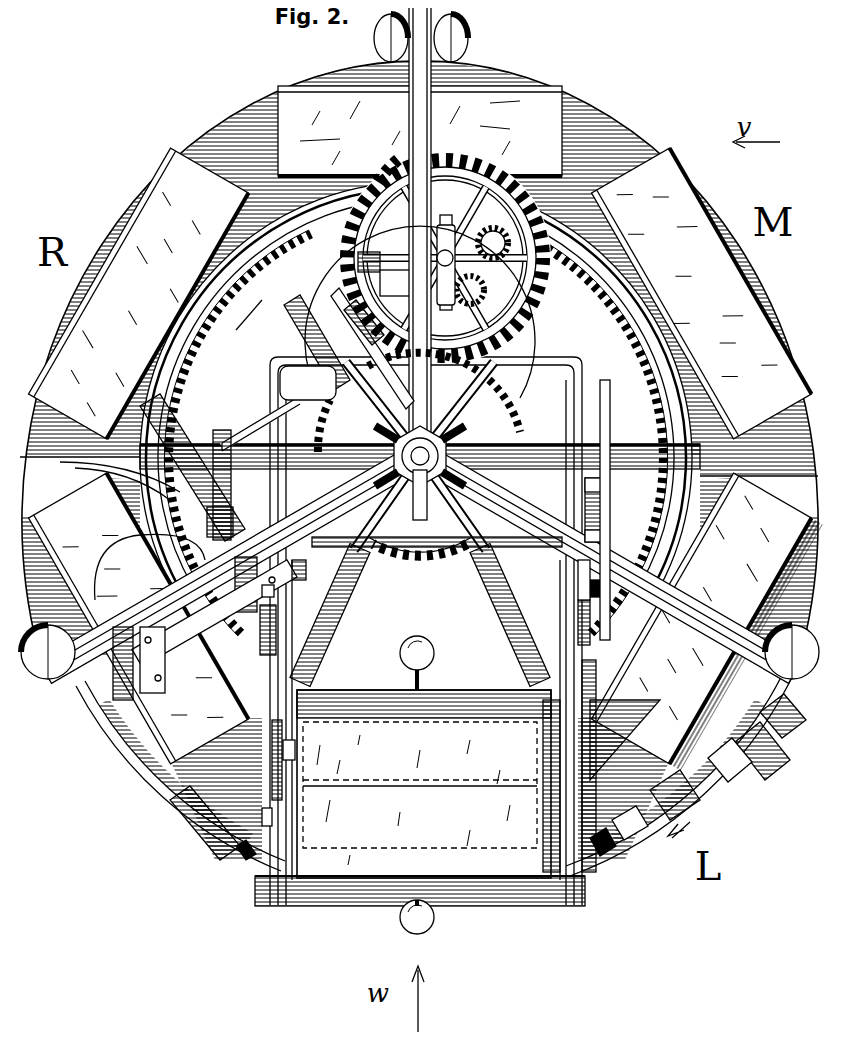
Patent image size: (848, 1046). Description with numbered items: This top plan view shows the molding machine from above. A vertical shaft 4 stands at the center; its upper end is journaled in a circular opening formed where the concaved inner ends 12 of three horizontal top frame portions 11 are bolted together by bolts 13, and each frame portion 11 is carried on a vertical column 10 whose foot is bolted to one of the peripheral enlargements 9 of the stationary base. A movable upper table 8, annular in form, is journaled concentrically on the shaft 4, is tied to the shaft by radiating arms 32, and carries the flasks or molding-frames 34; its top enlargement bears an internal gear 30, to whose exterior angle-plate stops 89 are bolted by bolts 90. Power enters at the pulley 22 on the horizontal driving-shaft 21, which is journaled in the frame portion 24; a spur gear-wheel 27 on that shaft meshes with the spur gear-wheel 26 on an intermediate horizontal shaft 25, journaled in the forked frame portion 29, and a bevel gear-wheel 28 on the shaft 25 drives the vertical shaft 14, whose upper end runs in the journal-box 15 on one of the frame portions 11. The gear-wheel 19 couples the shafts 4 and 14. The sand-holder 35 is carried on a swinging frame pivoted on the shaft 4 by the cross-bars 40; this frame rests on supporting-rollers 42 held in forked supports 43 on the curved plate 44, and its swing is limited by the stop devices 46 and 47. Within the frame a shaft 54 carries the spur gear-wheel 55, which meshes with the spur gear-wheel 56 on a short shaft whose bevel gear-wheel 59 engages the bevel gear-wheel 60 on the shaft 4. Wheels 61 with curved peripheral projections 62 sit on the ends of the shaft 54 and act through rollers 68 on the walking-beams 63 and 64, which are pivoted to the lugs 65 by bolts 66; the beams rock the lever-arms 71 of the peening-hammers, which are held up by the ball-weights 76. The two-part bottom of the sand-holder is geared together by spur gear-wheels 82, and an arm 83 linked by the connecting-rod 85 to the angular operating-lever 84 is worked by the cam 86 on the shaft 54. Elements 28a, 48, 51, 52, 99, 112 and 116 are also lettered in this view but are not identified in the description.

The vertical shaft 4 is at (482, 430).
The movable upper table 8 is at (617, 150).
The peripheral enlargements 9 is at (460, 50).
The vertical columns 10 is at (452, 30).
The horizontal top frame portions 11 is at (420, 345).
The inner ends of frame portions 12 is at (456, 438).
The bolts 13 is at (452, 450).
The shaft 14 is at (446, 298).
The journal-box 15 is at (446, 216).
The gear-wheel 19 is at (488, 410).
The horizontal driving-shaft 21 is at (262, 430).
The pulley 22 is at (192, 467).
The frame portion 24 is at (396, 336).
The intermediate horizontal shaft 25 is at (368, 262).
The spur gear-wheel 26 is at (290, 302).
The spur gear-wheel 27 is at (332, 372).
The bevel gear-wheel 28 is at (336, 290).
The gear 28a is at (396, 178).
The bifurcated frame portion 29 is at (388, 283).
The internal gear 30 is at (240, 333).
The arms 32 is at (604, 462).
The flasks 34 is at (426, 428).
The upper sand-holder 35 is at (500, 890).
The cross-bars 40 is at (512, 446).
The supporting-rollers 42 is at (726, 754).
The forked supports 43 is at (664, 806).
The curved plate 44 is at (604, 856).
The stop device 46 is at (180, 818).
The stop device 47 is at (772, 738).
The stop 48 is at (244, 850).
The pinion 51 is at (470, 250).
The gear sector 52 is at (312, 636).
The shaft 54 is at (508, 548).
The spur gear-wheel 55 is at (276, 592).
The spur gear-wheel 56 is at (424, 784).
The bevel gear-wheel 59 is at (594, 730).
The bevel gear-wheel 60 is at (520, 332).
The wheels 61 is at (601, 511).
The curved peripheral projections 62 is at (601, 488).
The walking-beam 63 is at (266, 816).
The walking-beam 64 is at (540, 652).
The lugs 65 is at (570, 606).
The bolts 66 is at (570, 620).
The roller 68 is at (601, 537).
The lever-arm 71 is at (272, 860).
The ball-weights 76 is at (422, 648).
The spur gear-wheels 82 is at (545, 736).
The arm 83 is at (290, 752).
The angular operating-lever 84 is at (278, 618).
The connecting-rod 85 is at (322, 708).
The cam 86 is at (321, 569).
The stops 89 is at (248, 268).
The bolts 90 is at (416, 409).
The link 99 is at (160, 640).
The block 112 is at (130, 663).
The spring 116 is at (150, 560).